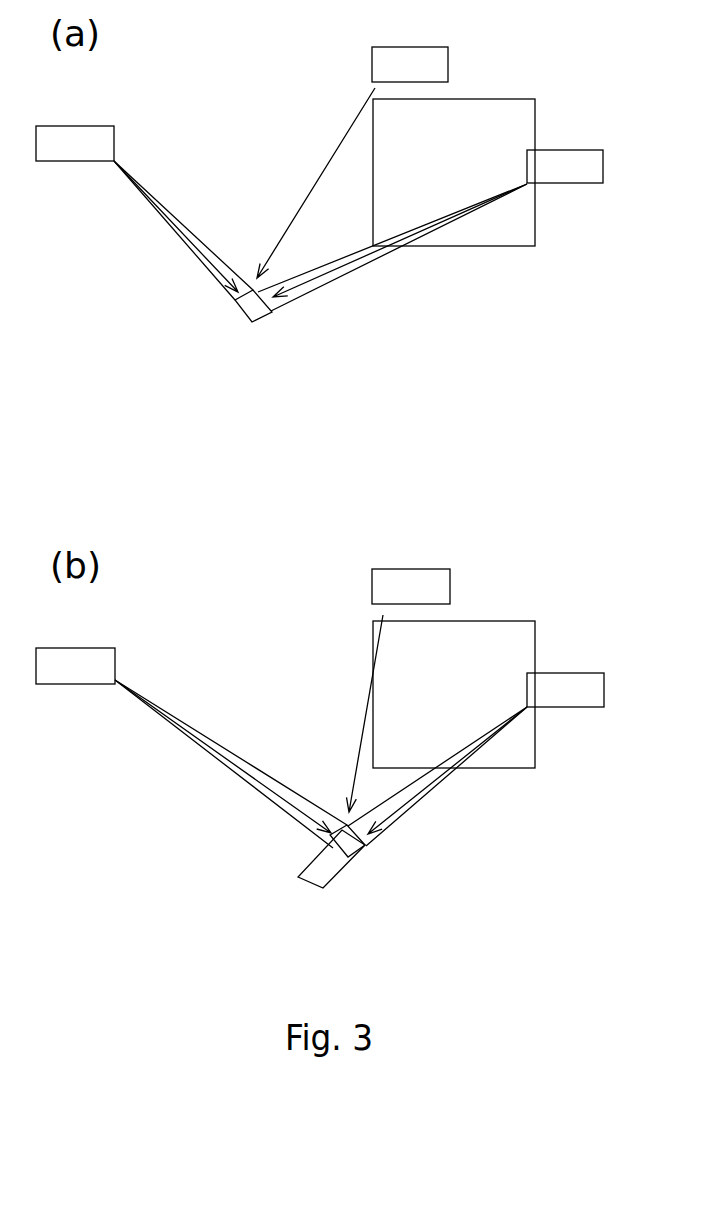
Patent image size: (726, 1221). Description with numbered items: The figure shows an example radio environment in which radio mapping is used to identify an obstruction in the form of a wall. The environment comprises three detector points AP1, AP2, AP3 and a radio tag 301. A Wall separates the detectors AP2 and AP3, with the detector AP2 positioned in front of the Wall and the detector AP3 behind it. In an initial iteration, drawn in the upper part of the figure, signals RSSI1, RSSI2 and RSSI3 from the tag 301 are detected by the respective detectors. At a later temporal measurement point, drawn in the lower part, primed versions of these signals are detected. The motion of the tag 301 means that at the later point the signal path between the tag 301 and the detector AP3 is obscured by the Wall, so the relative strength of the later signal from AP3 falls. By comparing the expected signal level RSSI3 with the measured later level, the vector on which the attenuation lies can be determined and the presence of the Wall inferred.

The radio tag 301 is at (255, 305).
The detector point AP1 is at (75, 143).
The detector point AP2 is at (565, 166).
The detector point AP3 is at (410, 64).
The wall Wall is at (454, 172).
The signal RSSI1 is at (173, 230).
The signal RSSI2 is at (392, 247).
The signal RSSI3 is at (309, 183).